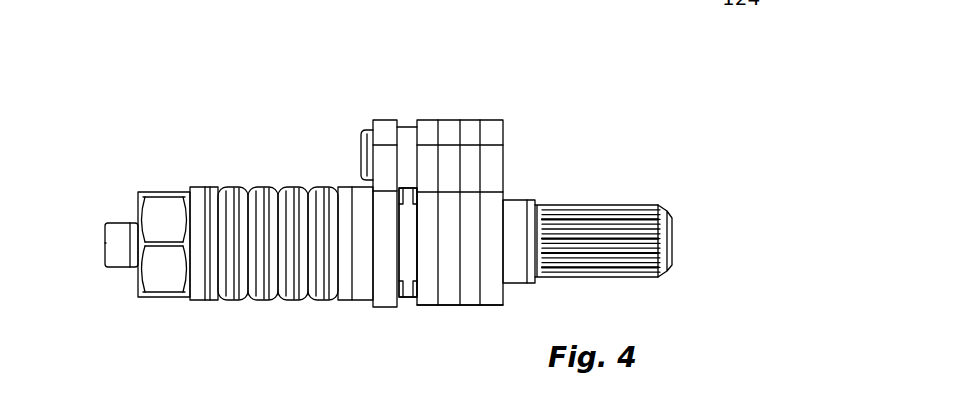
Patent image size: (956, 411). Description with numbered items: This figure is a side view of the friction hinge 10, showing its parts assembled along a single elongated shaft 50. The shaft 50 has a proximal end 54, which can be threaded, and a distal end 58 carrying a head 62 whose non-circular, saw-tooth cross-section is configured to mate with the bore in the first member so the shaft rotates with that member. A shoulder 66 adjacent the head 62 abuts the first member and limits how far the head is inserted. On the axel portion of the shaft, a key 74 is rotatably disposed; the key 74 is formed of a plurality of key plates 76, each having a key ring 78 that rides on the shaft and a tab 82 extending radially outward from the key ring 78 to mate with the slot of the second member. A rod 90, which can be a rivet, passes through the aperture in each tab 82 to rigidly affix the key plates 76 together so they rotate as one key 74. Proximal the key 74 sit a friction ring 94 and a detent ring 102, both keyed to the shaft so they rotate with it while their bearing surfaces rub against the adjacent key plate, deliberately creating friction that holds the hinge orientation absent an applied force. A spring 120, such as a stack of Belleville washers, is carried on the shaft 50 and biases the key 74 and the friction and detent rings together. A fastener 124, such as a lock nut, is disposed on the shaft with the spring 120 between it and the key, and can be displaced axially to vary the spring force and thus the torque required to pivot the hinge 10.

The hinge 10 is at (243, 101).
The elongated shaft 50 is at (105, 243).
The proximal end 54 is at (117, 267).
The fastener 124 is at (157, 285).
The spring 120 is at (240, 301).
The rod 90 is at (361, 160).
The key 74 is at (393, 120).
The friction ring 94 is at (365, 300).
The detent ring 102 is at (410, 300).
The key plate 76 is at (443, 119).
The tab 82 is at (493, 160).
The key ring 78 is at (450, 288).
The shoulder 66 is at (530, 199).
The head 62 is at (605, 206).
The distal end 58 is at (663, 204).